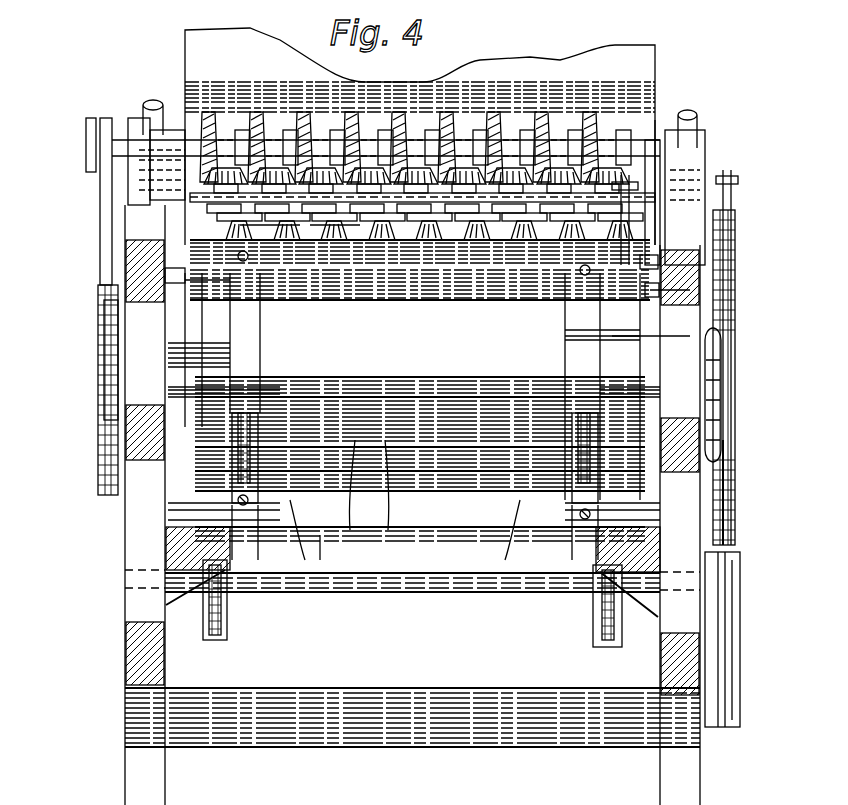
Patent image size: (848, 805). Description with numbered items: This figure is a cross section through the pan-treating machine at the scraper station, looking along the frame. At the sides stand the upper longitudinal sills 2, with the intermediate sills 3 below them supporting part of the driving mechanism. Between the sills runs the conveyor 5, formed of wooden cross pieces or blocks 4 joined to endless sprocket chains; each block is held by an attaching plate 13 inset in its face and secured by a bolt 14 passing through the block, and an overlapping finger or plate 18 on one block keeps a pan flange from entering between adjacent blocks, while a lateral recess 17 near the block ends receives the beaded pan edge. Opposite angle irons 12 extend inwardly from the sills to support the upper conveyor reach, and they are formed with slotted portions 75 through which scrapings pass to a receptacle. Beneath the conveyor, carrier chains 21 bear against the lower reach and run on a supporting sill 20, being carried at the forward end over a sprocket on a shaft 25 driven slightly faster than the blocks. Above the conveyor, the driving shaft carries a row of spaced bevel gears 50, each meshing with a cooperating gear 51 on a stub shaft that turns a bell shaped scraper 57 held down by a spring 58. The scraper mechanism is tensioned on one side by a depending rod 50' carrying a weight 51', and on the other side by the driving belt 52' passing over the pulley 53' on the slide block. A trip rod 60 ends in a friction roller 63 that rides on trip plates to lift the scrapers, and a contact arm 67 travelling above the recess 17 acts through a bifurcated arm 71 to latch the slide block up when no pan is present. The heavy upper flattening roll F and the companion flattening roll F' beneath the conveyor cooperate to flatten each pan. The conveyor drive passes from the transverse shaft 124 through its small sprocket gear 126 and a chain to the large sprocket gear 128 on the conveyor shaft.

The upper longitudinal sill 2 is at (175, 310).
The intermediate sill 3 is at (145, 430).
The cross piece or block 4 is at (382, 525).
The conveyor 5 is at (405, 530).
The angle iron 12 is at (175, 332).
The attaching plate 13 is at (236, 500).
The bolt 14 is at (300, 560).
The lateral recess 17 is at (190, 520).
The finger or plate 18 is at (258, 500).
The supporting sill 20 is at (185, 548).
The carrier chain 21 is at (248, 525).
The shaft 25 is at (330, 592).
The bevel gear 50 is at (375, 121).
The depending rod 50' is at (749, 483).
The cooperating gear 51 is at (448, 122).
The weight 51' is at (739, 639).
The driving belt 52' is at (70, 201).
The pulley 53' is at (66, 152).
The scraper 57 is at (250, 238).
The spring 58 is at (328, 245).
The rod 60 is at (190, 210).
The friction roller 63 is at (172, 274).
The contact arm 67 is at (185, 238).
The bifurcated arm 71 is at (88, 158).
The slotted portion 75 is at (190, 282).
The shaft 124 is at (432, 382).
The small sprocket gear 126 is at (98, 380).
The large sprocket gear 128 is at (96, 482).
The flattening roll F is at (681, 168).
The companion flattening roll F' is at (690, 340).